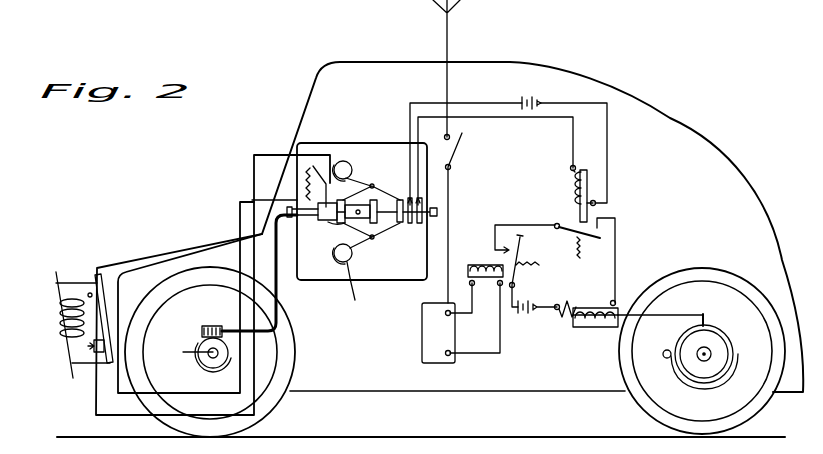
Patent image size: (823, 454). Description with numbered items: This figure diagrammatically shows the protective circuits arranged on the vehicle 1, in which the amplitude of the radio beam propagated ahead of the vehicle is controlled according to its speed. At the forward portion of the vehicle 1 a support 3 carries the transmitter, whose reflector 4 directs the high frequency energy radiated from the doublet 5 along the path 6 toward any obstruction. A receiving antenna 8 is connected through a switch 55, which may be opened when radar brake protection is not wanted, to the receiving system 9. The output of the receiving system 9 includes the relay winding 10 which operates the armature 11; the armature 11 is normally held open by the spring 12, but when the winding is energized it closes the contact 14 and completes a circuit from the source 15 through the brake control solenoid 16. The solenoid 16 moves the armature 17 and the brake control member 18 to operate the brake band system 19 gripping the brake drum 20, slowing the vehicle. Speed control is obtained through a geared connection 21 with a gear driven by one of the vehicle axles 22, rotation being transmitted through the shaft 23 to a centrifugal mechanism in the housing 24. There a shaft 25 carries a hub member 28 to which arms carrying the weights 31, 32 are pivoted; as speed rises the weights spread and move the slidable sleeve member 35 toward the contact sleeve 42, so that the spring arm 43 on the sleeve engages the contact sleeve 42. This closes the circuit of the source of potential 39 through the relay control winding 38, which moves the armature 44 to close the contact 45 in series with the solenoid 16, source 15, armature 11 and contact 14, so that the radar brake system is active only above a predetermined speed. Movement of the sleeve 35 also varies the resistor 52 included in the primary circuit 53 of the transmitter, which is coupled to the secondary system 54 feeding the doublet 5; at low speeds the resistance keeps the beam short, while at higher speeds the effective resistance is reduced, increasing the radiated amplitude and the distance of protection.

The vehicle 1 is at (688, 143).
The support 3 is at (118, 350).
The reflector 4 is at (108, 268).
The doublet 5 is at (50, 281).
The path 6 is at (226, 8).
The receiving antenna 8 is at (449, 22).
The receiving system 9 is at (423, 345).
The relay winding 10 is at (484, 257).
The armature 11 is at (525, 237).
The spring 12 is at (531, 266).
The contact 14 is at (508, 248).
The source 15 is at (528, 325).
The brake control solenoid 16 is at (589, 336).
The armature 17 is at (588, 308).
The brake control member 18 is at (677, 312).
The brake band system 19 is at (722, 323).
The brake drum 20 is at (700, 368).
The geared connection 21 is at (212, 326).
The vehicle axle 22 is at (194, 360).
The shaft 23 is at (276, 283).
The housing 24 is at (343, 141).
The shaft 25 is at (337, 250).
The hub member 28 is at (398, 224).
The weight 31 is at (348, 163).
The weight 32 is at (361, 293).
The slidable sleeve member 35 is at (338, 226).
The relay control winding 38 is at (594, 190).
The source of potential 39 is at (538, 76).
The contact sleeve 42 is at (375, 190).
The spring arm 43 is at (362, 198).
The armature 44 is at (603, 241).
The contact 45 is at (617, 225).
The resistor 52 is at (306, 182).
The primary circuit 53 is at (80, 290).
The secondary system 54 is at (66, 320).
The switch 55 is at (458, 148).